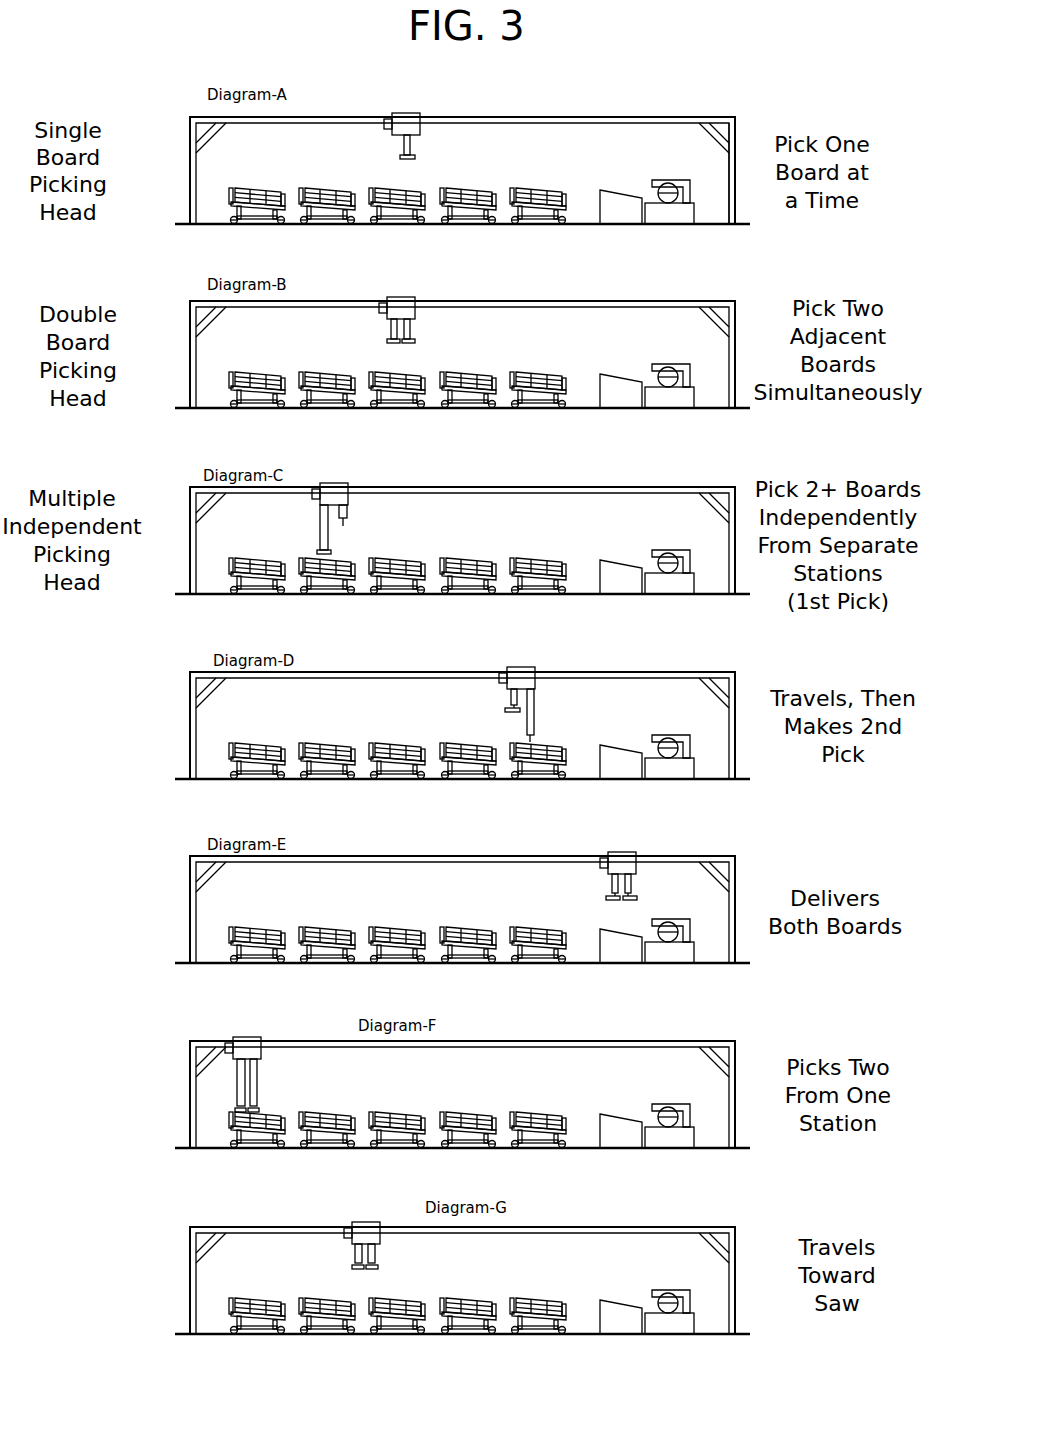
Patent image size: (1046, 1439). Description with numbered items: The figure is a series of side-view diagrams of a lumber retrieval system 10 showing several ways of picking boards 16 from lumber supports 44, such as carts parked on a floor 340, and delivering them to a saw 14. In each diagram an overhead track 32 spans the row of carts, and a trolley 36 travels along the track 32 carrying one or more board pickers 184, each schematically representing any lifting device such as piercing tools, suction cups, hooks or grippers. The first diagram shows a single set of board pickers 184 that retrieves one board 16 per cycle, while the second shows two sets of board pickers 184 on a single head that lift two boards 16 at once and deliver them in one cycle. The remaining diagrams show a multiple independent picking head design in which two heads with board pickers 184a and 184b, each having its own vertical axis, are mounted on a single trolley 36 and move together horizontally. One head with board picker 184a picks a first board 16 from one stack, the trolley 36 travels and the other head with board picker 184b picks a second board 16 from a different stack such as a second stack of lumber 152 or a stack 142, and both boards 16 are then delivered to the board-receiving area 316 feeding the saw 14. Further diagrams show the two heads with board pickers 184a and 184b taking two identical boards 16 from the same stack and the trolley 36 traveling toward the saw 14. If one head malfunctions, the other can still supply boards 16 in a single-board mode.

The lumber retrieval system 10 is at (749, 91).
The saw 14 is at (672, 182).
The board 16 is at (400, 158).
The overhead track 32 is at (290, 126).
The trolley 36 is at (404, 150).
The lumber support 44 is at (322, 224).
The second board supply station 142 is at (532, 558).
The second stack of lumber 152 is at (492, 558).
The board picker 184 is at (412, 152).
The board picker 184a is at (320, 538).
The board picker 184b is at (343, 522).
The board-receiving area 316 is at (610, 190).
The floor 340 is at (717, 222).